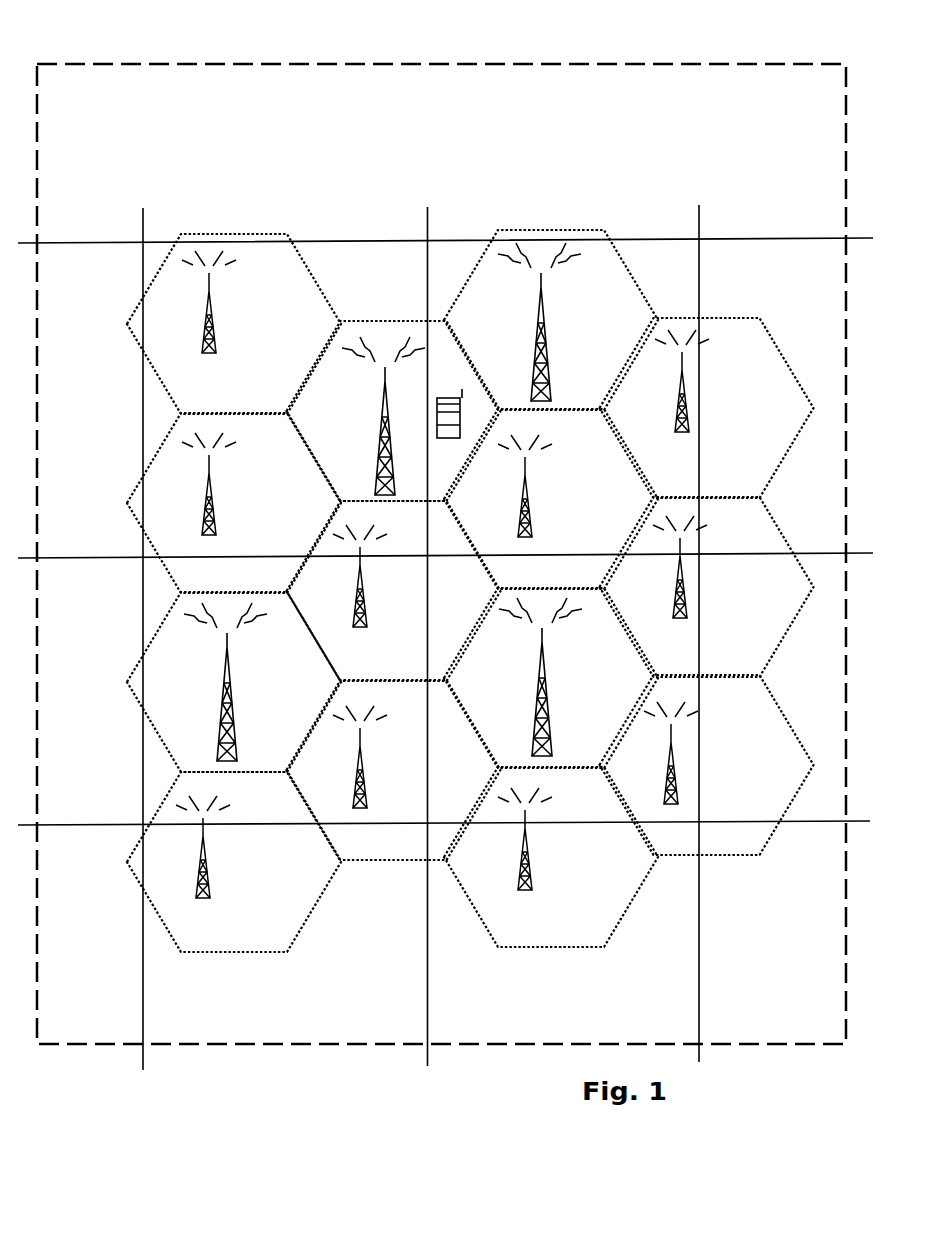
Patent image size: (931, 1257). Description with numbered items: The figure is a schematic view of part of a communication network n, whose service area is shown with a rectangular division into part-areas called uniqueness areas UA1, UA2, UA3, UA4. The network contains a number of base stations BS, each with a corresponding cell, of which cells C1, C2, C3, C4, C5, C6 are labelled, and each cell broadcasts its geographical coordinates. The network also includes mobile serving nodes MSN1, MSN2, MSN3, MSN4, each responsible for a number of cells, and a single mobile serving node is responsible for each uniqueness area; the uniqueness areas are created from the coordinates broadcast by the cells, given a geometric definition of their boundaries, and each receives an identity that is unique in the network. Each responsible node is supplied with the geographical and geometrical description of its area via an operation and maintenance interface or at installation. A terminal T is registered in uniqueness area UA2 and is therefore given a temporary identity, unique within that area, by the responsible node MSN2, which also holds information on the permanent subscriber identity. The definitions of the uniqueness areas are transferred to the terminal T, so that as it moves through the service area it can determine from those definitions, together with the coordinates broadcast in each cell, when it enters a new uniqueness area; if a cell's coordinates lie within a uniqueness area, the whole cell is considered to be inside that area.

The communication network n is at (136, 66).
The uniqueness area UA1 is at (355, 265).
The uniqueness area UA2 is at (660, 265).
The uniqueness area UA3 is at (167, 600).
The uniqueness area UA4 is at (633, 773).
The terminal T is at (448, 397).
The base station BS is at (546, 276).
The mobile serving node MSN1 is at (383, 416).
The mobile serving node MSN2 is at (542, 322).
The mobile serving node MSN3 is at (228, 682).
The mobile serving node MSN4 is at (542, 677).
The cell C1 is at (292, 345).
The cell C2 is at (374, 447).
The cell C3 is at (595, 369).
The cell C4 is at (762, 427).
The cell C5 is at (290, 503).
The cell C6 is at (414, 638).